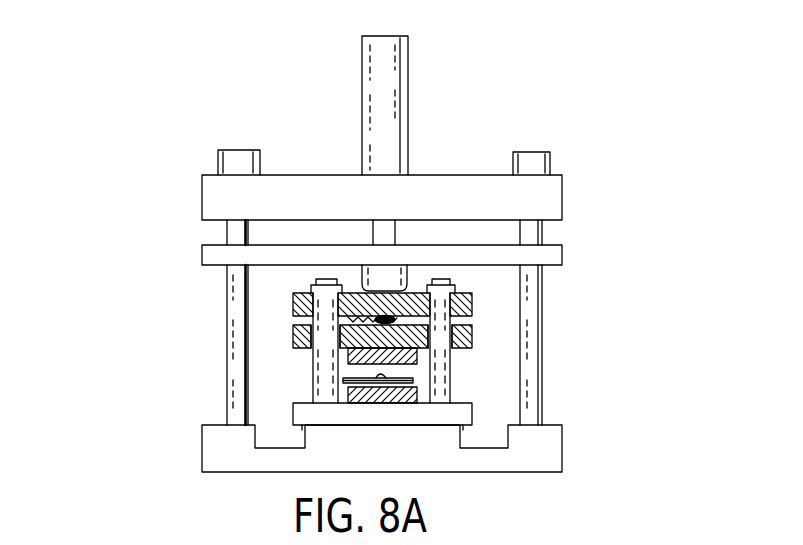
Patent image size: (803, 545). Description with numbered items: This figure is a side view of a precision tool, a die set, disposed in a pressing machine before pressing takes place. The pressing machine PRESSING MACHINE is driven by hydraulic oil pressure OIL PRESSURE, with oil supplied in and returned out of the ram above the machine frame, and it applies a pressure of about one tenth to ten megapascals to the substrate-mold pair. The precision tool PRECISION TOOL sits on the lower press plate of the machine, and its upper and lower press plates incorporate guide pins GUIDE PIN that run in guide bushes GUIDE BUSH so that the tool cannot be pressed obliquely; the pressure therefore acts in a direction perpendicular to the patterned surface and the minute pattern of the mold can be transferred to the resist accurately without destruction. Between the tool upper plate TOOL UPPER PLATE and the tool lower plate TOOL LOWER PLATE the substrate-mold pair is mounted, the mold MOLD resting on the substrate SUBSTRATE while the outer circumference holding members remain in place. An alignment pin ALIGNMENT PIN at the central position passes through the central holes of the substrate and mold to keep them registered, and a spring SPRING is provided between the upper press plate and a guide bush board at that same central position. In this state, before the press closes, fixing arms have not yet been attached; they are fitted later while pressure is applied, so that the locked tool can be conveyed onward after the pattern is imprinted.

The pressing machine PRESSING MACHINE is at (483, 138).
The oil pressure OIL PRESSURE is at (362, 89).
The precision tool PRECISION TOOL is at (480, 285).
The guide pin GUIDE PIN is at (443, 310).
The guide bush GUIDE BUSH is at (472, 328).
The tool upper plate TOOL UPPER PLATE is at (418, 362).
The mold MOLD is at (416, 379).
The substrate SUBSTRATE is at (414, 388).
The tool lower plate TOOL LOWER PLATE is at (465, 388).
The spring SPRING is at (372, 318).
The alignment pin ALIGNMENT PIN is at (376, 373).